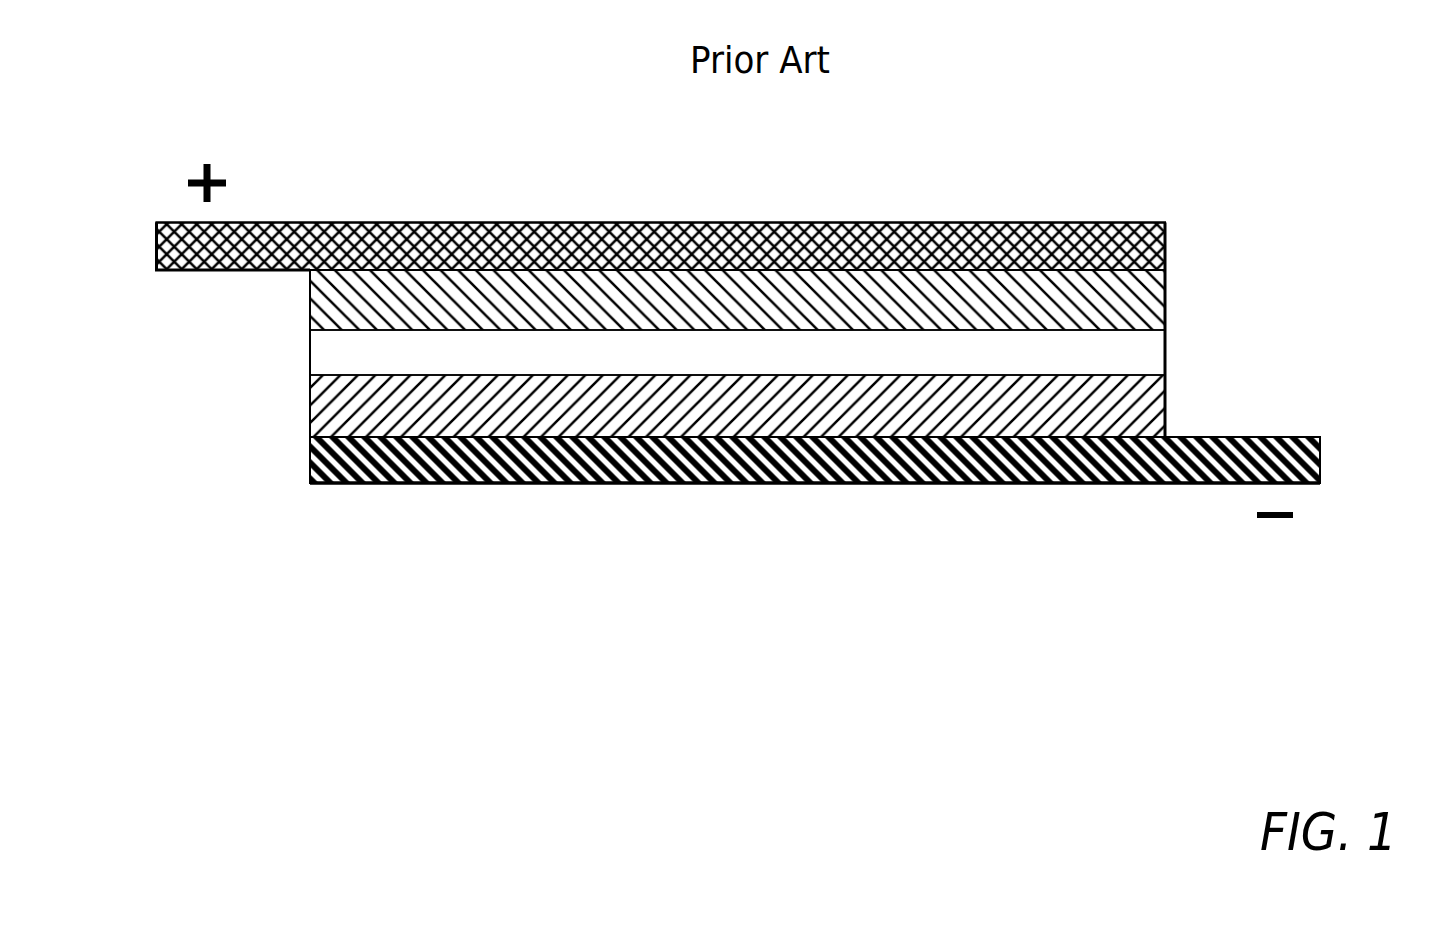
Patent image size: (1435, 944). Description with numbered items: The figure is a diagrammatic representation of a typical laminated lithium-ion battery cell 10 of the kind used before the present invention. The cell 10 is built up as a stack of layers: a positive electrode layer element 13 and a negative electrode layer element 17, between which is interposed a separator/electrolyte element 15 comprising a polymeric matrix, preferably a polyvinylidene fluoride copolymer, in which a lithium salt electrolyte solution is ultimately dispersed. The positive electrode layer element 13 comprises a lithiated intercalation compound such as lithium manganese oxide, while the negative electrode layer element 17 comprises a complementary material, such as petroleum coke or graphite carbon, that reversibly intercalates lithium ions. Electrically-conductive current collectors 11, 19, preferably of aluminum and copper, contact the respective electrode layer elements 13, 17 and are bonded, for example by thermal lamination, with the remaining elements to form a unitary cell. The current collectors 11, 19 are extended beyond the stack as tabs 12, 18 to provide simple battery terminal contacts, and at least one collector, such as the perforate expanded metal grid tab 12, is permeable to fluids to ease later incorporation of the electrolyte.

The cell 10 is at (657, 540).
The current collector 11 is at (1167, 246).
The tab 12 is at (157, 250).
The positive electrode layer element 13 is at (1167, 296).
The separator/electrolyte element 15 is at (1157, 355).
The negative electrode layer element 17 is at (310, 407).
The tab 18 is at (1322, 458).
The current collector 19 is at (310, 458).